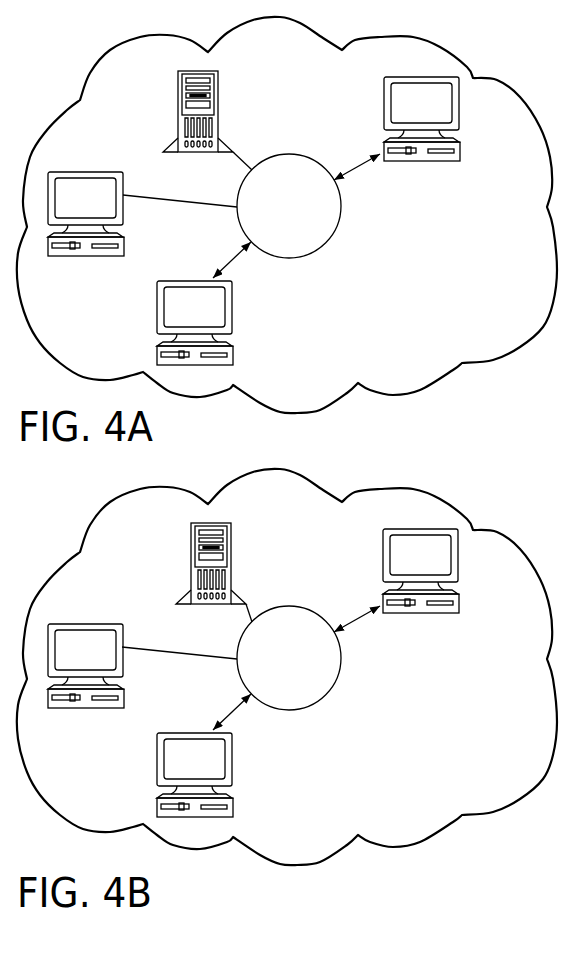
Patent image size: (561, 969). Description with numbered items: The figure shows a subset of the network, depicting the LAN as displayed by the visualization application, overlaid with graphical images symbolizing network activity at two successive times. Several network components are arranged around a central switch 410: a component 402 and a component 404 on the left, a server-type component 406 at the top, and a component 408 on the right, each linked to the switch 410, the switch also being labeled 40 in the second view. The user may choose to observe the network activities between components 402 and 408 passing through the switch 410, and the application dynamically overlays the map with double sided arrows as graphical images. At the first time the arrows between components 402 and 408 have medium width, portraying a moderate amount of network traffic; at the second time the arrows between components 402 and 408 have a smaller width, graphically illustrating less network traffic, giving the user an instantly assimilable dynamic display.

In FIG. 4A, the network component 402 is at (157, 318).
In FIG. 4B, the network component 402 is at (157, 777).
In FIG. 4A, the network component 404 is at (72, 256).
In FIG. 4B, the network component 404 is at (81, 708).
In FIG. 4A, the network component 406 is at (178, 110).
In FIG. 4B, the network component 406 is at (191, 562).
In FIG. 4A, the network component 408 is at (426, 161).
In FIG. 4B, the network component 408 is at (417, 613).
In FIG. 4A, the switch 410 is at (329, 239).
In FIG. 4B, the network 40 is at (329, 691).